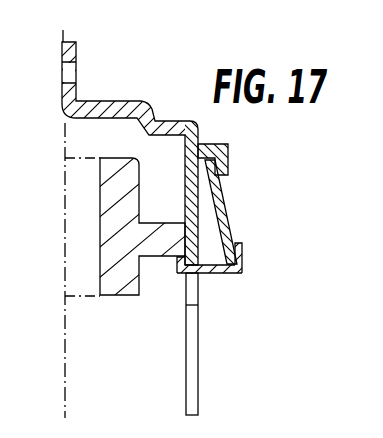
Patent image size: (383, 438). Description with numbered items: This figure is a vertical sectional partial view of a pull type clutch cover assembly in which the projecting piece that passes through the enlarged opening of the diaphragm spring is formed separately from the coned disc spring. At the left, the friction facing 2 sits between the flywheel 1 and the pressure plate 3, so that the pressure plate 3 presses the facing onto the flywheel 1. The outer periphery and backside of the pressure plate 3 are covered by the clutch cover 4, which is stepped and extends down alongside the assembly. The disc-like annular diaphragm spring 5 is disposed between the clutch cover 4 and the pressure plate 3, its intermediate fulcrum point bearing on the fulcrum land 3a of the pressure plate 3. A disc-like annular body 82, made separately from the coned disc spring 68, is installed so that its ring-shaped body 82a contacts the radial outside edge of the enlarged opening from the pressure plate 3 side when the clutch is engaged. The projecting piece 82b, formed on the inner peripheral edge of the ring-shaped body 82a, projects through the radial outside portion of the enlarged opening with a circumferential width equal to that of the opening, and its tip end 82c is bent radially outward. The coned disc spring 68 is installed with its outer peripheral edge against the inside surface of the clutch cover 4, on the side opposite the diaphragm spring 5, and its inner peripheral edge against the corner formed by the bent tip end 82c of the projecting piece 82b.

The flywheel 1 is at (60, 405).
The friction facing 2 is at (78, 283).
The pressure plate 3 is at (191, 200).
The fulcrum land 3a is at (158, 243).
The clutch cover 4 is at (122, 101).
The diaphragm spring 5 is at (200, 358).
The coned disc spring 68 is at (228, 214).
The disc-like annular body 82 is at (191, 219).
The ring-shaped body 82a is at (182, 258).
The projecting piece 82b is at (216, 277).
The tip end 82c is at (242, 250).